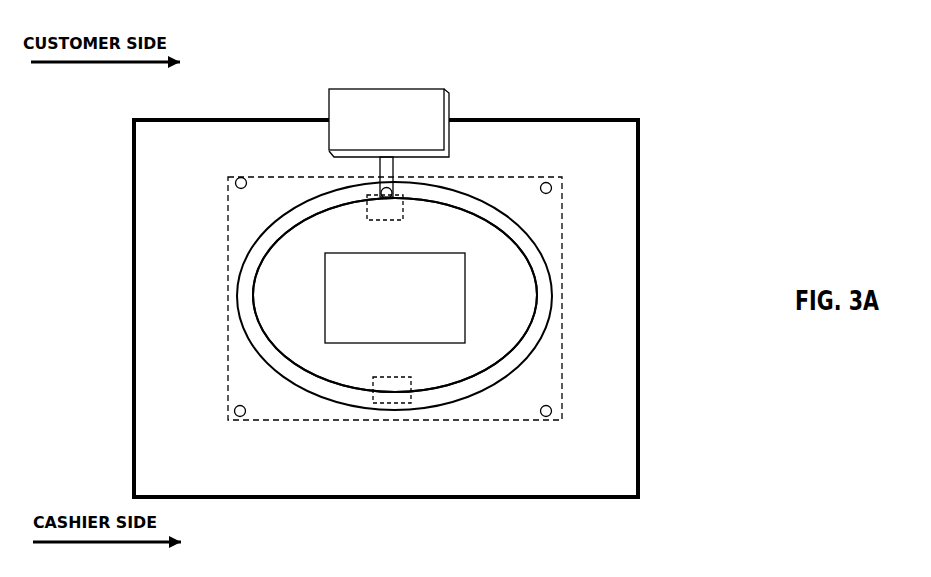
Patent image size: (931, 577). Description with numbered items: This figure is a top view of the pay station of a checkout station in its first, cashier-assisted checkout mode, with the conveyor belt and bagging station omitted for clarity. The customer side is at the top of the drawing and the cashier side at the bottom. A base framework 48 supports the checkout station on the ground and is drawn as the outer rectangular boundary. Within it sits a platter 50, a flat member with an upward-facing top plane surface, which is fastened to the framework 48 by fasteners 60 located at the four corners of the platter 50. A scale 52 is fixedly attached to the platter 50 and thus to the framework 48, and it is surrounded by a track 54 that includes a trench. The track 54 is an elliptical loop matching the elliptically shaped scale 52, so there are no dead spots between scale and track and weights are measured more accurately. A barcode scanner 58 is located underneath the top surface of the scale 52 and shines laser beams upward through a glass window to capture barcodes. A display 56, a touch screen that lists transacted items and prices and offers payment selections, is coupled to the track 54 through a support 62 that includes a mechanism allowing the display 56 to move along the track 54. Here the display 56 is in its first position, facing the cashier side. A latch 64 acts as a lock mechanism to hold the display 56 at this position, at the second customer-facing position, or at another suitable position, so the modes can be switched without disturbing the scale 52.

The base framework 48 is at (641, 139).
The platter 50 is at (511, 425).
The scale 52 is at (496, 317).
The track 54 is at (532, 256).
The display 56 is at (450, 86).
The barcode scanner 58 is at (358, 318).
The fasteners 60 is at (235, 181).
The support 62 is at (397, 177).
The latch 64 is at (407, 218).